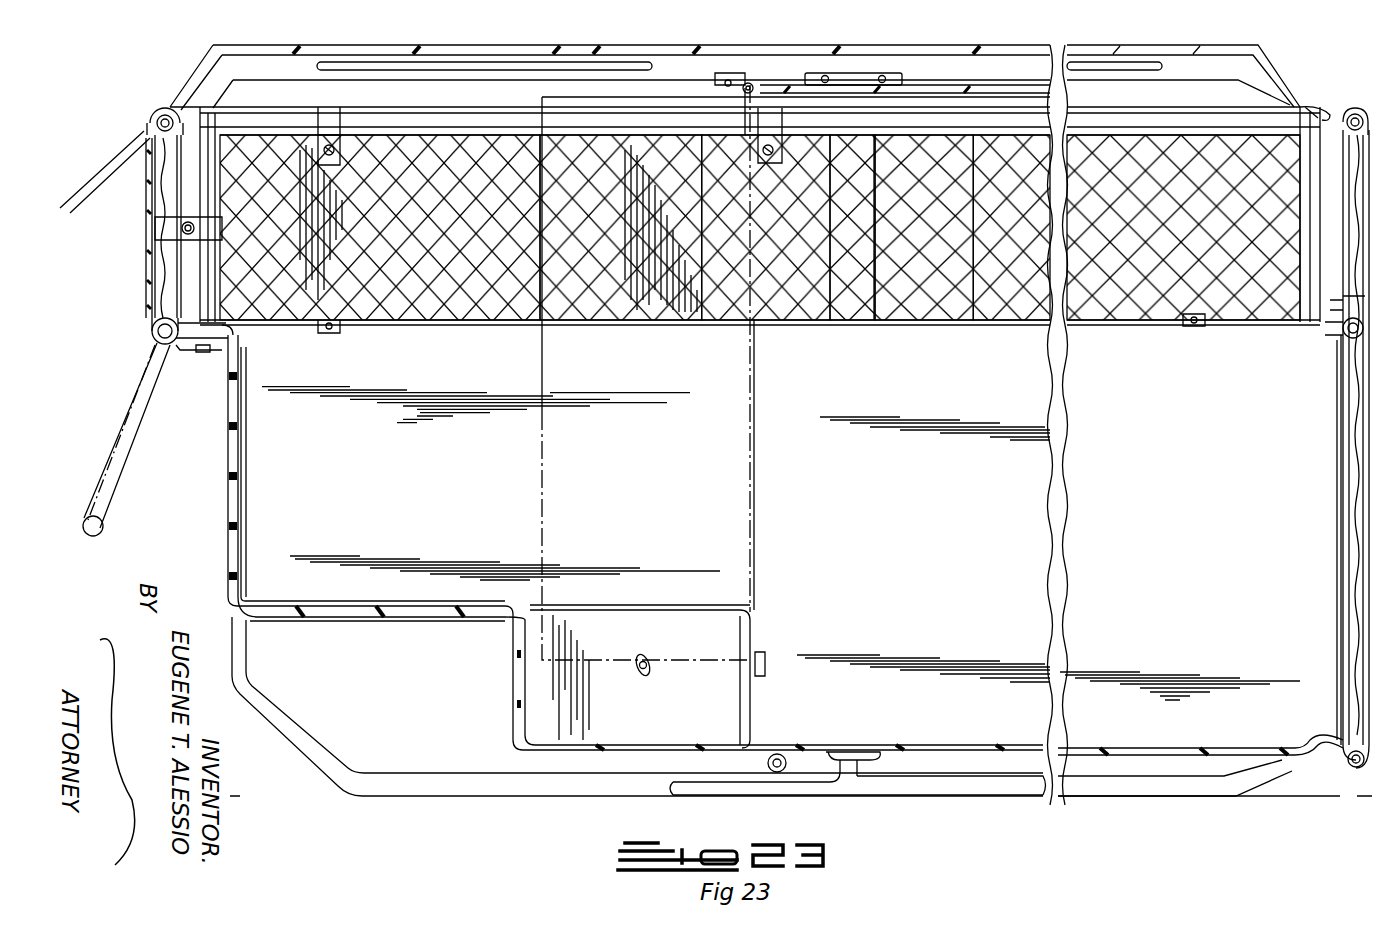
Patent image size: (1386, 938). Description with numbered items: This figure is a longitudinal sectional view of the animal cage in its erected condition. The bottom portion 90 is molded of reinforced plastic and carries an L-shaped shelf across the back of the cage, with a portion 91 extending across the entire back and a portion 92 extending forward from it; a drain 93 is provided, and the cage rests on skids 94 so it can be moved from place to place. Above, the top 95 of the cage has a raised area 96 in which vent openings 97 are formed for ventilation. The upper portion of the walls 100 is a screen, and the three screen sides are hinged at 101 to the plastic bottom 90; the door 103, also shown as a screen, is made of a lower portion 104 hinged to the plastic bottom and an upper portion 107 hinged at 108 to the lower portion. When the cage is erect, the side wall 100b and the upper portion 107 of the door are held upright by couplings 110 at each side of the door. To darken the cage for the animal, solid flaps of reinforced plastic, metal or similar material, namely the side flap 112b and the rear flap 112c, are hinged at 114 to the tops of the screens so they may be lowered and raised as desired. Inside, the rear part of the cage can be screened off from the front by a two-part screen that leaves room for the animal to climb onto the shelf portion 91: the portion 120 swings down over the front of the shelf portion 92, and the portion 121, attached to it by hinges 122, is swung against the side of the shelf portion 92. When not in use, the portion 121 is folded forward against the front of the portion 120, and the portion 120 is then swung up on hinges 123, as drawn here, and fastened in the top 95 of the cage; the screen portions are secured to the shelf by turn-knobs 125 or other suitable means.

The bottom portion 90 is at (1215, 637).
The shelf portion extending across the back 91 is at (333, 605).
The shelf portion extending forward 92 is at (633, 610).
The drain 93 is at (828, 790).
The skids 94 is at (965, 780).
The top 95 is at (1296, 62).
The raised area 96 is at (900, 45).
The vent openings 97 is at (568, 62).
The walls 100 is at (1250, 150).
The side wall 100b is at (997, 290).
The hinge 101 is at (176, 348).
The door 103 is at (1337, 576).
The lower portion of the door 104 is at (1342, 523).
The upper portion of the door 107 is at (1348, 110).
The hinge 108 is at (1342, 335).
The couplings 110 is at (155, 232).
The solid flap 112b is at (885, 285).
The rear flap 112c is at (145, 287).
The hinge 114 is at (148, 132).
The screen portion 120 is at (755, 600).
The screen portion 121 is at (950, 85).
The hinges 122 is at (838, 73).
The hinges 123 is at (748, 82).
The turn-knobs 125 is at (640, 680).